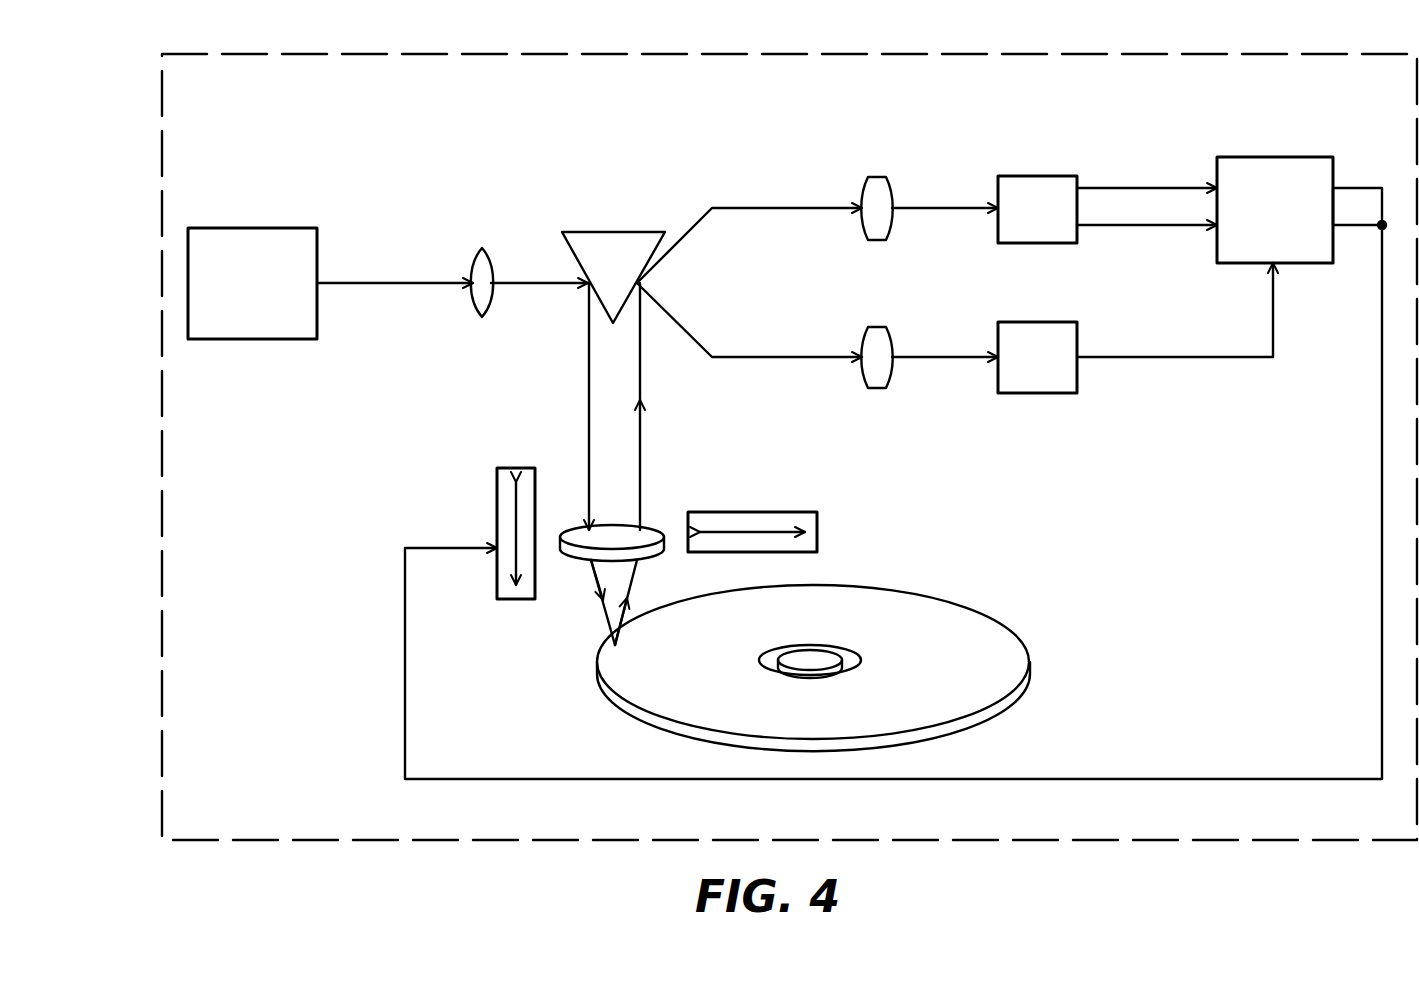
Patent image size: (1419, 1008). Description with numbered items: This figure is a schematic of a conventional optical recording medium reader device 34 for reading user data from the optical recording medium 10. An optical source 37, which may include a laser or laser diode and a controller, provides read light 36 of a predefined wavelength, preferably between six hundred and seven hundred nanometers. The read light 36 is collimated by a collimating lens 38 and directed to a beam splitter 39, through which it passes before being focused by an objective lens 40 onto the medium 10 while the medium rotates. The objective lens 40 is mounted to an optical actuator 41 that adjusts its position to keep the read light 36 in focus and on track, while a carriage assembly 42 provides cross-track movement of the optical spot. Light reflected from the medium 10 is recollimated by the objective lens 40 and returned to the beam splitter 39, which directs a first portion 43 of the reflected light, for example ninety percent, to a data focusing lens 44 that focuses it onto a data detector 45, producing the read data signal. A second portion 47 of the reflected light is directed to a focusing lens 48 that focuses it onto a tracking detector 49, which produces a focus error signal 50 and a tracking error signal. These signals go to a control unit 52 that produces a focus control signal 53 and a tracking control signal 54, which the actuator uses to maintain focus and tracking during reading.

The optical recording medium 10 is at (990, 630).
The optical recording medium reader device 34 is at (1150, 840).
The read light 36 is at (604, 612).
The optical source 37 is at (255, 228).
The collimating lens 38 is at (487, 255).
The beam splitter 39 is at (630, 232).
The objective lens 40 is at (655, 530).
The optical actuator 41 is at (497, 520).
The carriage assembly 42 is at (735, 512).
The first portion of reflected light 43 is at (777, 357).
The data focusing lens 44 is at (892, 380).
The data detector 45 is at (1050, 393).
The second portion of reflected light 47 is at (778, 208).
The focusing lens 48 is at (878, 177).
The tracking detector 49 is at (1040, 176).
The focus error signal 50 is at (1152, 188).
The control unit 52 is at (1302, 157).
The focus control signal 53 is at (1365, 188).
The tracking control signal 54 is at (1360, 226).